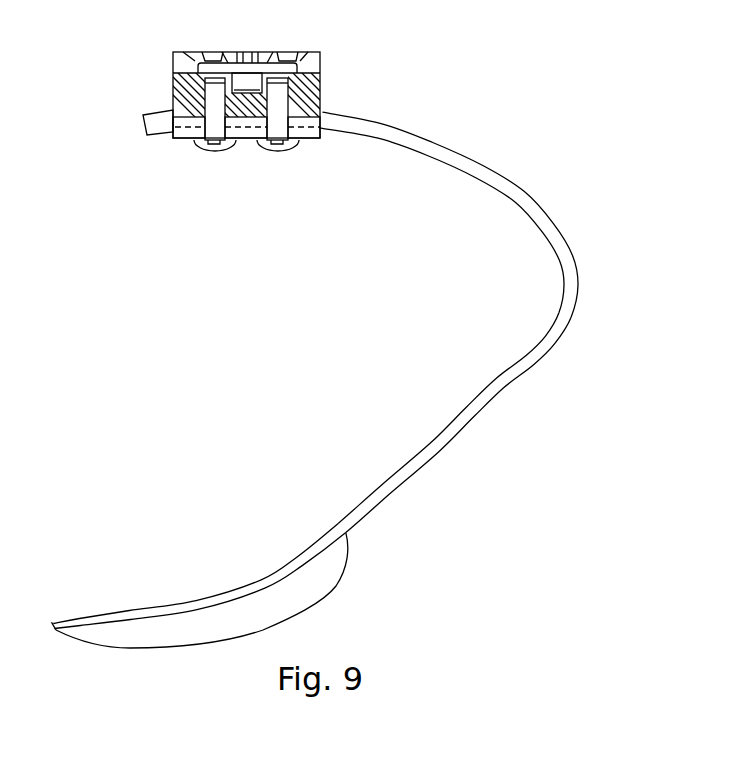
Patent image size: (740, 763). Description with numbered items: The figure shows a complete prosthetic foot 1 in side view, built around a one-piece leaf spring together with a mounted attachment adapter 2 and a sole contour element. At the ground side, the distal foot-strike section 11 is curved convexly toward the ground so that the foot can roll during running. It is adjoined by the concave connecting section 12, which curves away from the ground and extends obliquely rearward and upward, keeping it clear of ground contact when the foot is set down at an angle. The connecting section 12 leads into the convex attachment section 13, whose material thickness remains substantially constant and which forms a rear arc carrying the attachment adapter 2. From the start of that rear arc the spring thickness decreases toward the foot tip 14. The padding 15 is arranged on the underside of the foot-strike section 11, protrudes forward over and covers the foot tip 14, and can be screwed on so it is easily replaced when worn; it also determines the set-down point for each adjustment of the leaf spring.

The prosthetic foot 1 is at (307, 389).
The attachment adapter 2 is at (152, 85).
The foot-strike section 11 is at (204, 572).
The connecting section 12 is at (445, 458).
The attachment section 13 is at (455, 126).
The foot tip 14 is at (72, 618).
The padding 15 is at (88, 638).